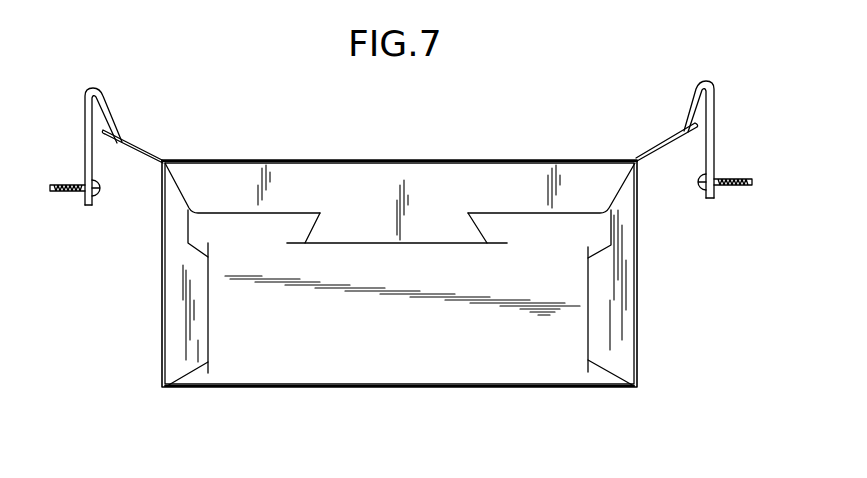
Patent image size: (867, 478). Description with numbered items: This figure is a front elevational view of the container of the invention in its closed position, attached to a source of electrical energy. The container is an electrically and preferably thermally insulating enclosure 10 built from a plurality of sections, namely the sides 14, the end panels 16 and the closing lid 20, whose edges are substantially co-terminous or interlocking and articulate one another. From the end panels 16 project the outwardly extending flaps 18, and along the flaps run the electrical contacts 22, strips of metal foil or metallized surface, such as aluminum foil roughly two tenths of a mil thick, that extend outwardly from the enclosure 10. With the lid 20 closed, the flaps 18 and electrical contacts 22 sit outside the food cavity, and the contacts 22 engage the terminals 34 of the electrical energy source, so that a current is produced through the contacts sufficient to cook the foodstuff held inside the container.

The enclosure 10 is at (161, 379).
The sides 14 is at (280, 375).
The end panels 16 is at (162, 318).
The outwardly extending flaps 18 is at (160, 163).
The closing lid 20 is at (338, 160).
The electrical contacts 22 is at (137, 147).
The terminals of the electrical energy source 34 is at (96, 90).